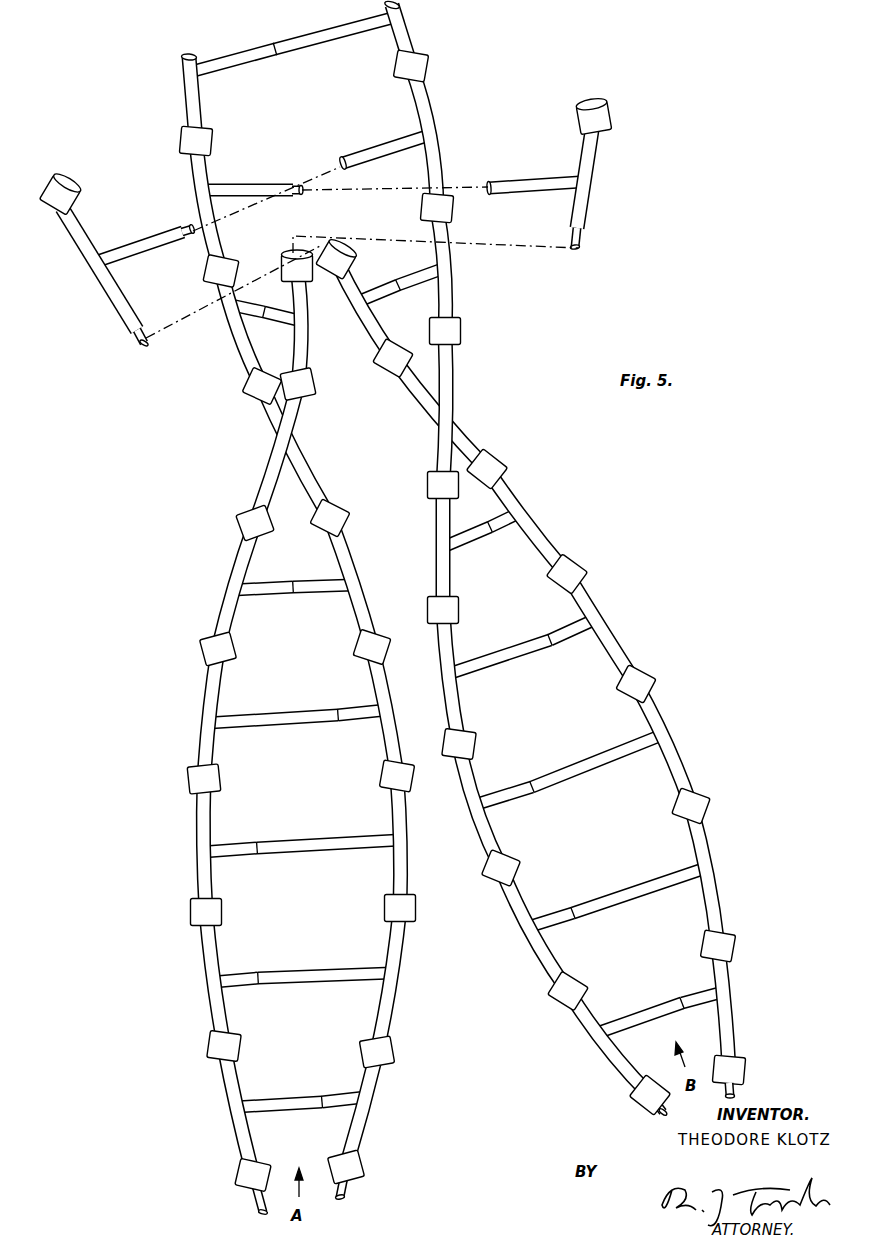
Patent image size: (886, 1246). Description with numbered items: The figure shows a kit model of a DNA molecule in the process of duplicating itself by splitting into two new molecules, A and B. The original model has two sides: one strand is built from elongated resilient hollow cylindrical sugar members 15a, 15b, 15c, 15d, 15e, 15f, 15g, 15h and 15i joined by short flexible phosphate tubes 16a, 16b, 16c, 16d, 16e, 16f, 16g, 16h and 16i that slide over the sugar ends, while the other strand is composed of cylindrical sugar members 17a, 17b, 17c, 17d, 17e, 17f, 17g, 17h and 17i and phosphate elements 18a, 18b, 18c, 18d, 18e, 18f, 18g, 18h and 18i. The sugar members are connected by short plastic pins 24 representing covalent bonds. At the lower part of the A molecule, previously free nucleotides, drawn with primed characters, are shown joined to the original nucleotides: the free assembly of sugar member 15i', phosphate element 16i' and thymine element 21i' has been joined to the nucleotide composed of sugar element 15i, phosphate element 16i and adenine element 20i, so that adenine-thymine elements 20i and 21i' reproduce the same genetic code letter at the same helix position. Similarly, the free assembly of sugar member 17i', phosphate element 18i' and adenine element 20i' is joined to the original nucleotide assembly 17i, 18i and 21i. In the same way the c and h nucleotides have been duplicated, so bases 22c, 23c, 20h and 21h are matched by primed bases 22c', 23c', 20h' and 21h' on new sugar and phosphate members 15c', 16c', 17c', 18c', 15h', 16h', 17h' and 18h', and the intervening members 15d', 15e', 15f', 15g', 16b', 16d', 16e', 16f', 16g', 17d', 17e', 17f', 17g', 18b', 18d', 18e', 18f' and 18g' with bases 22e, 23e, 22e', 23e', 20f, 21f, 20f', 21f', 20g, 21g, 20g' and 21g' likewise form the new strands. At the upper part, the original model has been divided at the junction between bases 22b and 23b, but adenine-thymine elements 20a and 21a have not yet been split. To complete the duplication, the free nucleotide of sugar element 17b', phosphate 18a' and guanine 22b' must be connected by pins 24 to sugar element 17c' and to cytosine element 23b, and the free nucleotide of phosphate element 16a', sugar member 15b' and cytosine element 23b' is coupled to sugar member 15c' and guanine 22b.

The sugar member 15a is at (186, 96).
The sugar member 15b is at (179, 206).
The sugar member 15c is at (223, 328).
The sugar member 15d is at (318, 452).
The sugar member 15e is at (376, 582).
The sugar member 15f is at (407, 711).
The sugar member 15g is at (428, 842).
The sugar member 15h is at (418, 980).
The sugar element 15i is at (387, 1126).
The phosphate element 16a is at (169, 141).
The phosphate element 16b is at (199, 279).
The phosphate element 16c is at (244, 393).
The phosphate element 16d is at (353, 513).
The phosphate element 16e is at (393, 646).
The phosphate element 16f is at (414, 776).
The phosphate element 16g is at (424, 910).
The phosphate element 16h is at (404, 1052).
The phosphate element 16i is at (378, 1160).
The sugar member 17a is at (415, 33).
The sugar member 17b is at (455, 137).
The sugar member 17c is at (475, 269).
The sugar member 17d is at (480, 408).
The sugar member 17e is at (420, 547).
The sugar member 17f is at (476, 677).
The sugar member 17g is at (496, 806).
The sugar member 17h is at (541, 929).
The sugar member 17i is at (613, 1053).
The phosphate element 18a is at (438, 64).
The phosphate element 18b is at (465, 208).
The phosphate element 18c is at (473, 331).
The phosphate element 18d is at (425, 478).
The phosphate element 18e is at (467, 607).
The phosphate element 18f is at (481, 739).
The phosphate element 18g is at (524, 868).
The phosphate element 18h is at (582, 982).
The phosphate element 18i is at (630, 1099).
The sugar member 15b' is at (614, 190).
The sugar member 15c' is at (327, 326).
The sugar member 15d' is at (255, 453).
The sugar member 15e' is at (214, 586).
The sugar member 15f' is at (181, 714).
The sugar member 15g' is at (170, 845).
The sugar member 15h' is at (183, 979).
The sugar member 15i' is at (213, 1130).
The phosphate element 16a' is at (622, 116).
The phosphate element 16b' is at (285, 251).
The phosphate element 16c' is at (320, 384).
The phosphate element 16d' is at (233, 523).
The phosphate element 16e' is at (197, 646).
The phosphate element 16f' is at (179, 778).
The phosphate element 16g' is at (179, 912).
The phosphate element 16h' is at (194, 1045).
The phosphate element 16i' is at (219, 1169).
The sugar element 17b' is at (94, 277).
The sugar element 17c' is at (360, 309).
The sugar member 17d' is at (429, 413).
The sugar member 17e' is at (541, 521).
The sugar member 17f' is at (618, 629).
The sugar member 17g' is at (691, 745).
The sugar member 17h' is at (737, 876).
The sugar member 17i' is at (751, 1008).
The phosphate 18a' is at (49, 209).
The phosphate element 18b' is at (347, 249).
The phosphate element 18c' is at (401, 347).
The phosphate element 18d' is at (510, 459).
The phosphate element 18e' is at (591, 564).
The phosphate element 18f' is at (661, 678).
The phosphate element 18g' is at (719, 806).
The phosphate element 18h' is at (742, 946).
The phosphate element 18i' is at (749, 1069).
The adenine element 20a is at (222, 60).
The thymine element 21a is at (342, 32).
The guanine base 22b is at (252, 174).
The cytosine element 23b is at (384, 140).
The guanine element 22b' is at (145, 235).
The cytosine element 23b' is at (533, 169).
The guanine element 22c is at (420, 267).
The cytosine element 23c is at (260, 330).
The guanine element 22c' is at (277, 302).
The cytosine element 23c' is at (377, 281).
The guanine element 22e is at (323, 600).
The cytosine element 23e is at (466, 549).
The guanine element 22e' is at (508, 536).
The cytosine element 23e' is at (263, 606).
The adenine element 20f is at (362, 734).
The thymine element 21f is at (499, 668).
The adenine element 20f' is at (572, 649).
The thymine element 21f' is at (273, 738).
The adenine element 20g is at (522, 809).
The thymine element 21g is at (328, 863).
The adenine element 20g' is at (242, 871).
The thymine element 21g' is at (596, 768).
The adenine element 20h is at (572, 927).
The thymine element 21h is at (325, 994).
The adenine element 20h' is at (252, 1000).
The thymine element 21h' is at (638, 893).
The adenine element 20i is at (339, 1115).
The thymine element 21i is at (639, 1029).
The adenine element 20i' is at (701, 1011).
The thymine element 21i' is at (279, 1121).
The pin 24 is at (195, 238).